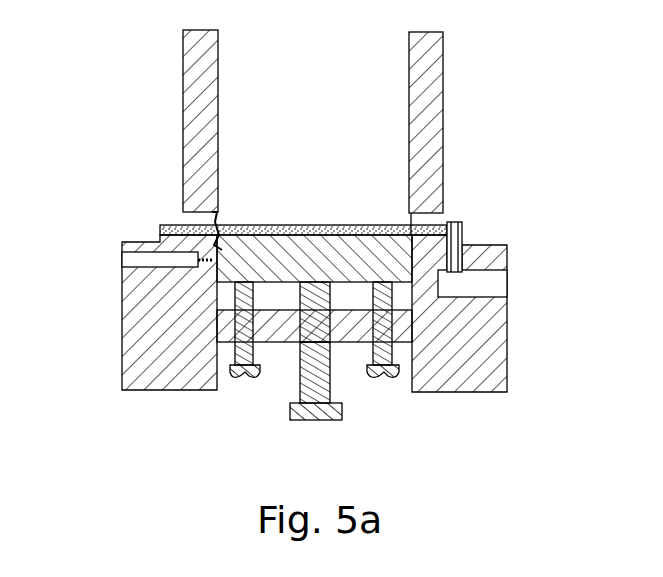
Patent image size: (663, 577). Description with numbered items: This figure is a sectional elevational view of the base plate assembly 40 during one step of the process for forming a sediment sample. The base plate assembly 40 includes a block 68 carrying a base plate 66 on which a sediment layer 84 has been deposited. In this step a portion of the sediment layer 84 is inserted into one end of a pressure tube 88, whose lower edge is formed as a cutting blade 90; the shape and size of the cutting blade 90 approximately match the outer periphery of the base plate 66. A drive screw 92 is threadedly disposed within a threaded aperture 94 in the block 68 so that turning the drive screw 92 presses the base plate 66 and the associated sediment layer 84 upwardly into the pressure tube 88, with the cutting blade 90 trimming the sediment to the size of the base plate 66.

The base plate assembly 40 is at (160, 186).
The base plate 66 is at (400, 272).
The block 68 is at (122, 330).
The sediment layer 84 is at (343, 228).
The pressure tube 88 is at (192, 100).
The cutting blade 90 is at (219, 212).
The drive screw 92 is at (302, 385).
The threaded aperture 94 is at (328, 368).